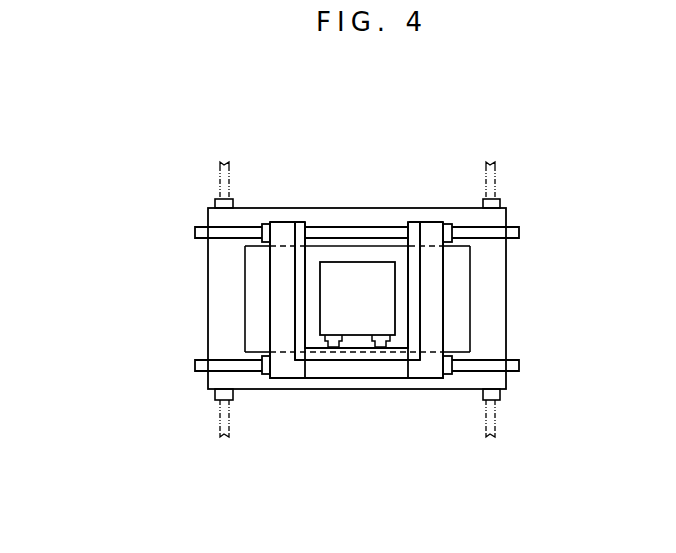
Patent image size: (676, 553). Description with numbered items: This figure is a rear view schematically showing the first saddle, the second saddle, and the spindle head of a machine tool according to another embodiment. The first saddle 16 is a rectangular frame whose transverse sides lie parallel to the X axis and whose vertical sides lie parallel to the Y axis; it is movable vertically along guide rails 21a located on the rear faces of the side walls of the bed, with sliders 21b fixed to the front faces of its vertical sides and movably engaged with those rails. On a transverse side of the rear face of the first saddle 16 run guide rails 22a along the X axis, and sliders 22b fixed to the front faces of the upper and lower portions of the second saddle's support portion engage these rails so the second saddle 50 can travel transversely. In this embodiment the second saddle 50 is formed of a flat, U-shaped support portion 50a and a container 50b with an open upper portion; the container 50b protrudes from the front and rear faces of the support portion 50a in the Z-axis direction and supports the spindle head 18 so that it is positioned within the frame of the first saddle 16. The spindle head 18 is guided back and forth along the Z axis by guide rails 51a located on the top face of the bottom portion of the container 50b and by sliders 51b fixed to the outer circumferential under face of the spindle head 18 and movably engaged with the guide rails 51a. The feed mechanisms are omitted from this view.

The first saddle 16 is at (403, 298).
The spindle head 18 is at (359, 239).
The guide rails 21a is at (356, 285).
The sliders 21b is at (356, 303).
The guide rails 22a is at (318, 299).
The sliders 22b is at (359, 256).
The second saddle 50 is at (242, 300).
The support portion 50a is at (296, 240).
The container 50b is at (430, 240).
The guide rails 51a is at (354, 410).
The sliders 51b is at (352, 400).